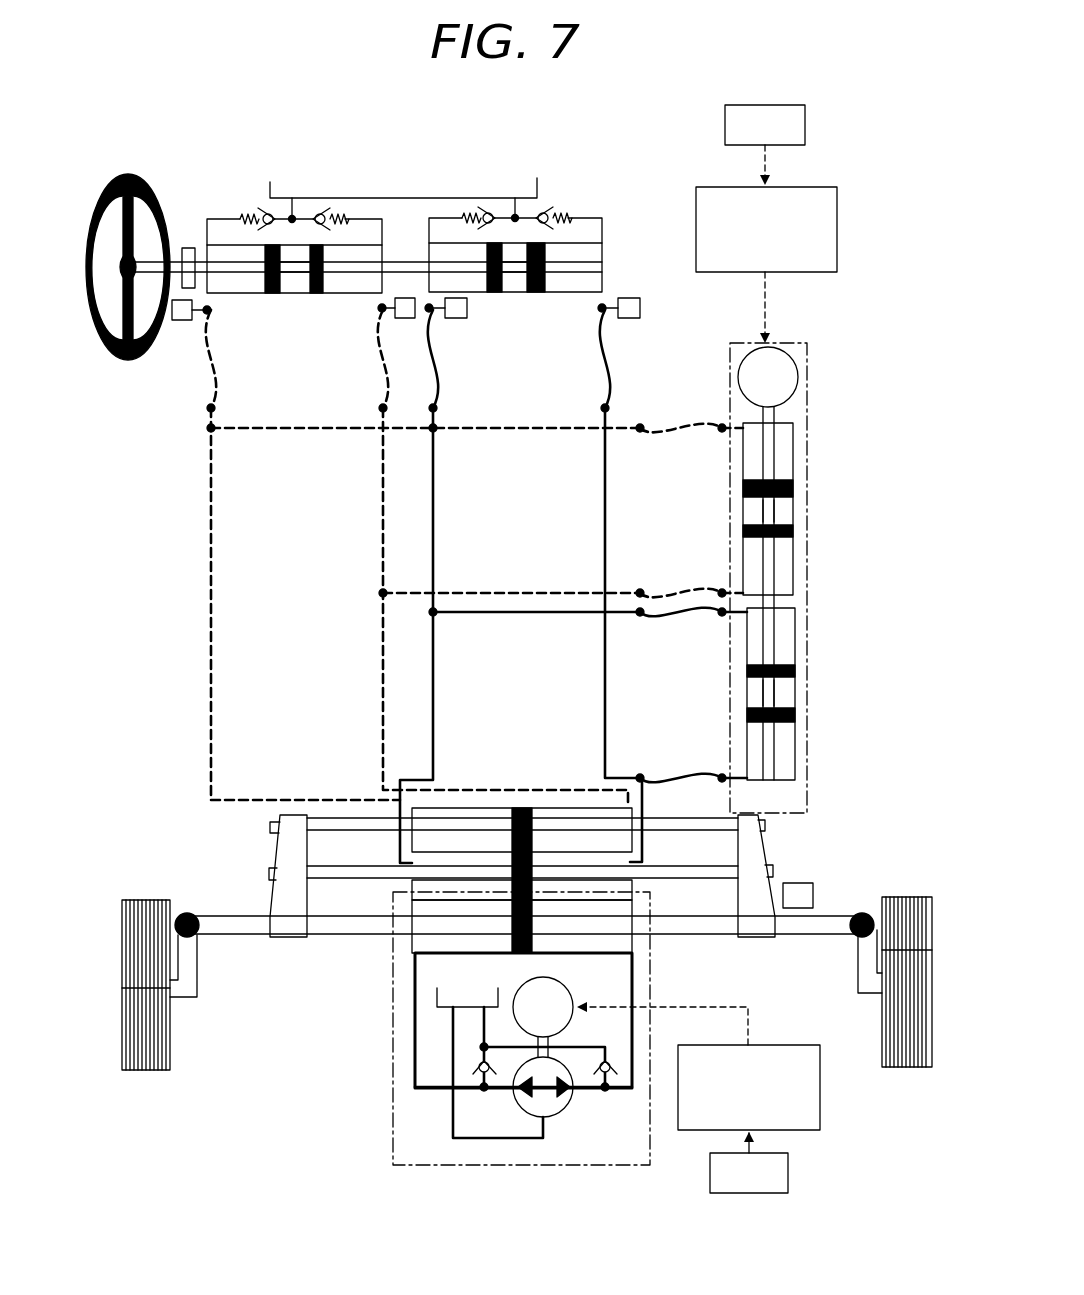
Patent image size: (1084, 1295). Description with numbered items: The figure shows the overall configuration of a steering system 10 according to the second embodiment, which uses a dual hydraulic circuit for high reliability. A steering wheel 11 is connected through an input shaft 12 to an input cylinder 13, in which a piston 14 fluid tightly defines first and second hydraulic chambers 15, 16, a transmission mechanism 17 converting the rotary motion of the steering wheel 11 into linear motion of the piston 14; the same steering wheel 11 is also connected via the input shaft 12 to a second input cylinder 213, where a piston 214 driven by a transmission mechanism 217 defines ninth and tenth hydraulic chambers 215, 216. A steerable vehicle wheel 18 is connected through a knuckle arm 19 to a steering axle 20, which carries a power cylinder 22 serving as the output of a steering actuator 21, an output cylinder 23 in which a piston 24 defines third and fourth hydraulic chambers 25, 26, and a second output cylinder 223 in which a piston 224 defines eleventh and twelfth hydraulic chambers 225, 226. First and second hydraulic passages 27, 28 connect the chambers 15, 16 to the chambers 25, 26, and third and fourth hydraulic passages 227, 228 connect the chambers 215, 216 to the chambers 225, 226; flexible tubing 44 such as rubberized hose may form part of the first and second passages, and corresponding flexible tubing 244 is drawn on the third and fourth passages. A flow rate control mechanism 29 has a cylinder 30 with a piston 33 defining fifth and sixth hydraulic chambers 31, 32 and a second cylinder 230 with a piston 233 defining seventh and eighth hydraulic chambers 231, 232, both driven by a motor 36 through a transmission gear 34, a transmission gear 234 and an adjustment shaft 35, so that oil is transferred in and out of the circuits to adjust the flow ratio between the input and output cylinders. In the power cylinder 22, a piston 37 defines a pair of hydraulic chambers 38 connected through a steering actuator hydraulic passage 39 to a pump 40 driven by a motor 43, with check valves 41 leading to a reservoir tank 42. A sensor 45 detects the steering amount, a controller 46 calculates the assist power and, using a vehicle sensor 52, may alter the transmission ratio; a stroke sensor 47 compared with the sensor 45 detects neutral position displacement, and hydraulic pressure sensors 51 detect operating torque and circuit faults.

The steering system 10 is at (140, 563).
The steering wheel 11 is at (138, 173).
The input shaft 12 is at (118, 222).
The input cylinder 13 is at (583, 242).
The piston 14 is at (534, 294).
The first hydraulic chamber 15 is at (452, 255).
The second hydraulic chamber 16 is at (594, 249).
The transmission mechanism 17 is at (520, 267).
The steerable vehicle wheel 18 is at (160, 1027).
The knuckle arm 19 is at (188, 963).
The steering axle 20 is at (708, 927).
The steering actuator 21 is at (396, 1125).
The power cylinder 22 is at (522, 953).
The output cylinder 23 is at (412, 884).
The piston 24 is at (513, 870).
The third hydraulic chamber 25 is at (422, 862).
The fourth hydraulic chamber 26 is at (616, 856).
The first hydraulic passage 27 is at (436, 513).
The second hydraulic passage 28 is at (604, 513).
The flow rate control mechanism 29 is at (730, 692).
The cylinder 30 is at (747, 638).
The fifth hydraulic chamber 31 is at (788, 640).
The sixth hydraulic chamber 32 is at (789, 752).
The piston 33 is at (796, 715).
The transmission gear 34 is at (758, 698).
The adjustment shaft 35 is at (775, 414).
The motor 36 is at (790, 368).
The piston 37 is at (640, 905).
The hydraulic chambers 38 is at (597, 942).
The steering actuator hydraulic passage 39 is at (531, 930).
The pump 40 is at (568, 1103).
The check valves 41 is at (477, 1063).
The reservoir tank 42 is at (437, 1000).
The motor 43 is at (638, 1025).
The flexible tubing 44 is at (605, 403).
The sensor 45 is at (186, 248).
The controller 46 is at (820, 188).
The stroke sensor 47 is at (813, 890).
The hydraulic pressure sensors 51 is at (634, 294).
The vehicle sensor 52 is at (806, 120).
The second input cylinder 213 is at (233, 244).
The piston 214 is at (316, 294).
The ninth hydraulic chamber 215 is at (238, 283).
The tenth hydraulic chamber 216 is at (340, 283).
The transmission mechanism 217 is at (298, 265).
The second output cylinder 223 is at (478, 807).
The piston 224 is at (522, 808).
The eleventh hydraulic chamber 225 is at (433, 815).
The twelfth hydraulic chamber 226 is at (568, 815).
The third hydraulic passage 227 is at (213, 513).
The fourth hydraulic passage 228 is at (381, 513).
The second cylinder 230 is at (743, 450).
The seventh hydraulic chamber 231 is at (786, 455).
The eighth hydraulic chamber 232 is at (788, 565).
The piston 233 is at (794, 530).
The transmission gear 234 is at (756, 507).
The hydraulic circuit 244 is at (383, 403).